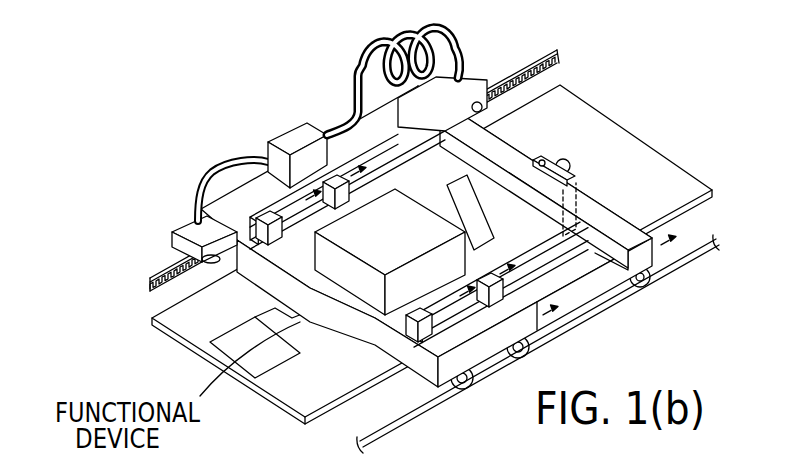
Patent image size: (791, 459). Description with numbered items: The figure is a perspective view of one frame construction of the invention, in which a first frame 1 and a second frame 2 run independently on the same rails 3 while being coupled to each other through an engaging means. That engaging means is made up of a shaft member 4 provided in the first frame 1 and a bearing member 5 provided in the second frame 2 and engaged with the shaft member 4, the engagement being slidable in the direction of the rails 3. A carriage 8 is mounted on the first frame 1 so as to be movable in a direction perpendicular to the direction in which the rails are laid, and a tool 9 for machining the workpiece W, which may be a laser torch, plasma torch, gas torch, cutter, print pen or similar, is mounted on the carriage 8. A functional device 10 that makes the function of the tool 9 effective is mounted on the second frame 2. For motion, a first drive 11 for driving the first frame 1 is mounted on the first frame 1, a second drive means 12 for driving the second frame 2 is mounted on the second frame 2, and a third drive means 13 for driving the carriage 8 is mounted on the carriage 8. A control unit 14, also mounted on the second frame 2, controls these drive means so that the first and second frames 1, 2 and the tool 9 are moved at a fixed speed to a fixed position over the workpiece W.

The first frame 1 is at (435, 107).
The second frame 2 is at (230, 203).
The rails 3 is at (548, 52).
The shaft member 4 is at (383, 153).
The bearing member 5 is at (278, 218).
The carriage 8 is at (562, 160).
The tool 9 is at (590, 186).
The functional device 10 is at (368, 232).
The first drive 11 is at (474, 78).
The second drive means 12 is at (178, 226).
The third drive means 13 is at (543, 160).
The control unit 14 is at (305, 123).
The workpiece W is at (172, 316).